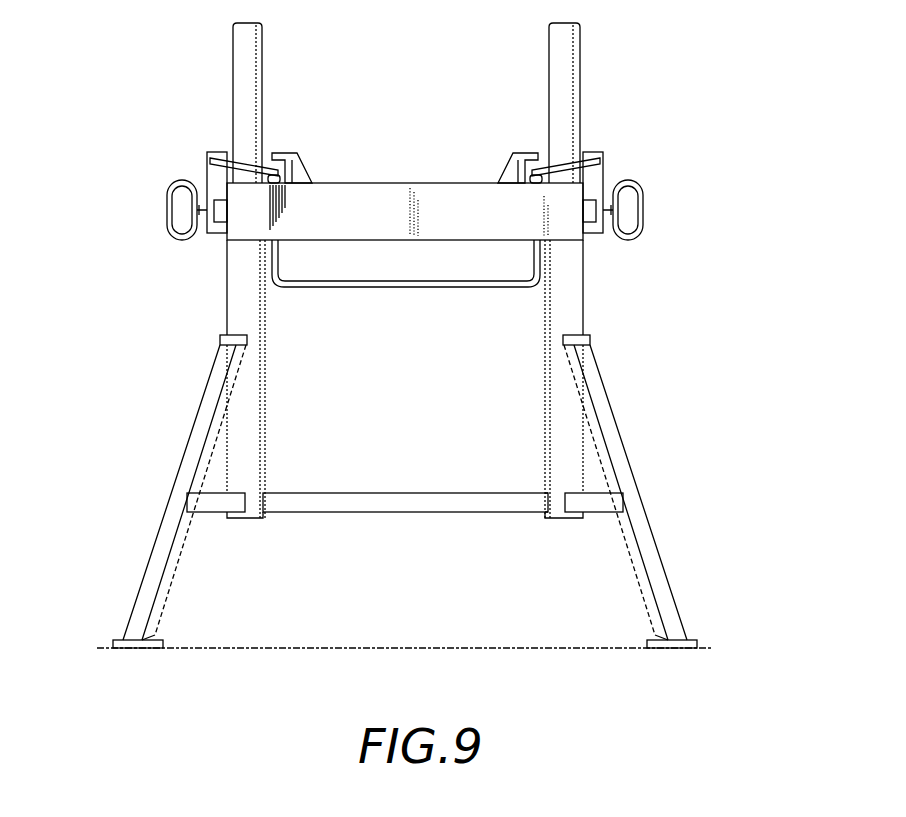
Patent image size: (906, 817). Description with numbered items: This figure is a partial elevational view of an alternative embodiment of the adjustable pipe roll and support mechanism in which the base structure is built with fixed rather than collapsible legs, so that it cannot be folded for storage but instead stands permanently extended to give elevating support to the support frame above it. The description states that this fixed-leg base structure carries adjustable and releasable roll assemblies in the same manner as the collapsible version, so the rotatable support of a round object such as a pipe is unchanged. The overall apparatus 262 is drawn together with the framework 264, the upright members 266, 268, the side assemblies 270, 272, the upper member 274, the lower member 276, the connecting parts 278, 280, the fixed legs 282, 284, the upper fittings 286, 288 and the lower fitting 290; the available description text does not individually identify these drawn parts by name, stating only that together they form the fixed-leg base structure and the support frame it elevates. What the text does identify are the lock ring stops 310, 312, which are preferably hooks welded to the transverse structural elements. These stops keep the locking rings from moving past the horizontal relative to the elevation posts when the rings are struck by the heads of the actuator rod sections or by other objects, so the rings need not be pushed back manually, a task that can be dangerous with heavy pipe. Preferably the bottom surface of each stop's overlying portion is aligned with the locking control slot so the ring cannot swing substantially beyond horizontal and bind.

The work support stand 262 is at (602, 136).
The frame 264 is at (620, 300).
The left vertical frame member 266 is at (267, 408).
The right vertical frame member 268 is at (547, 407).
The left clamp assembly 270 is at (258, 230).
The right clamp assembly 272 is at (555, 242).
The top plate 274 is at (449, 186).
The lower cross member 276 is at (383, 512).
The left lower bracket 278 is at (267, 493).
The right lower bracket 280 is at (547, 493).
The left leg 282 is at (195, 440).
The right leg 284 is at (613, 450).
The left upper leg bracket 286 is at (220, 336).
The right upper leg bracket 288 is at (590, 336).
The right leg mounting bracket 290 is at (598, 513).
The lock ring stop 310 is at (300, 153).
The lock ring stop 312 is at (518, 153).